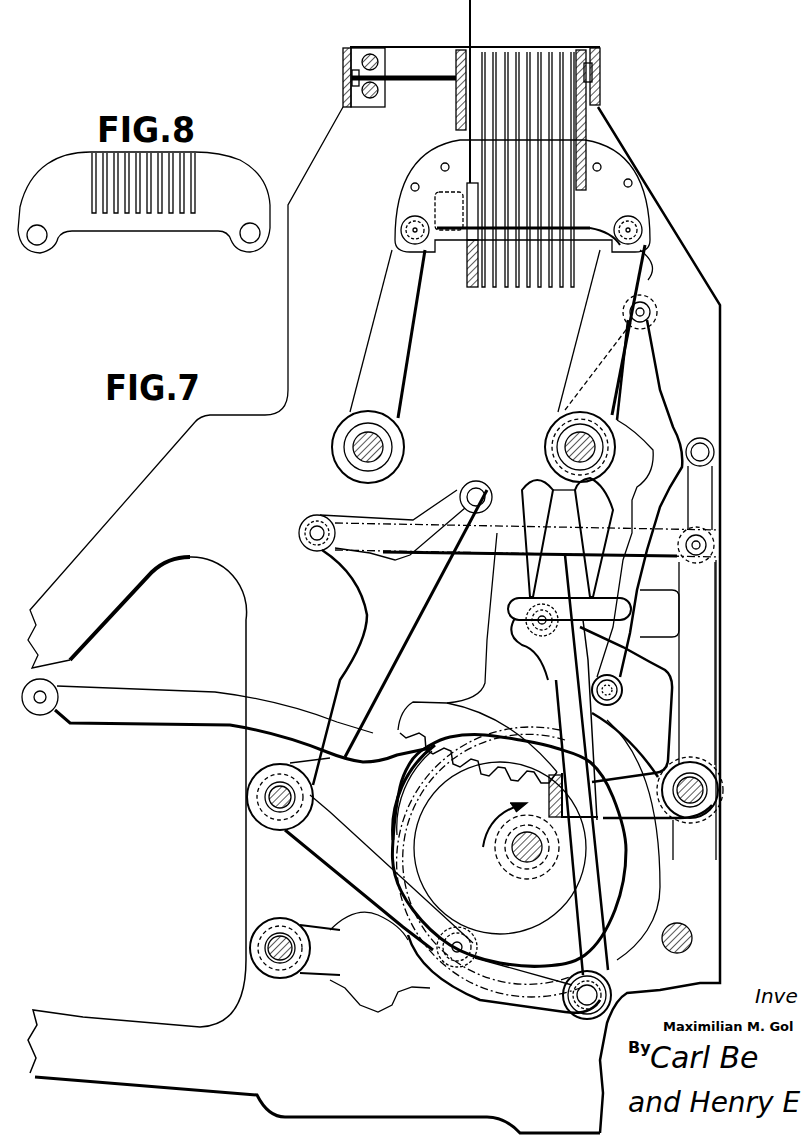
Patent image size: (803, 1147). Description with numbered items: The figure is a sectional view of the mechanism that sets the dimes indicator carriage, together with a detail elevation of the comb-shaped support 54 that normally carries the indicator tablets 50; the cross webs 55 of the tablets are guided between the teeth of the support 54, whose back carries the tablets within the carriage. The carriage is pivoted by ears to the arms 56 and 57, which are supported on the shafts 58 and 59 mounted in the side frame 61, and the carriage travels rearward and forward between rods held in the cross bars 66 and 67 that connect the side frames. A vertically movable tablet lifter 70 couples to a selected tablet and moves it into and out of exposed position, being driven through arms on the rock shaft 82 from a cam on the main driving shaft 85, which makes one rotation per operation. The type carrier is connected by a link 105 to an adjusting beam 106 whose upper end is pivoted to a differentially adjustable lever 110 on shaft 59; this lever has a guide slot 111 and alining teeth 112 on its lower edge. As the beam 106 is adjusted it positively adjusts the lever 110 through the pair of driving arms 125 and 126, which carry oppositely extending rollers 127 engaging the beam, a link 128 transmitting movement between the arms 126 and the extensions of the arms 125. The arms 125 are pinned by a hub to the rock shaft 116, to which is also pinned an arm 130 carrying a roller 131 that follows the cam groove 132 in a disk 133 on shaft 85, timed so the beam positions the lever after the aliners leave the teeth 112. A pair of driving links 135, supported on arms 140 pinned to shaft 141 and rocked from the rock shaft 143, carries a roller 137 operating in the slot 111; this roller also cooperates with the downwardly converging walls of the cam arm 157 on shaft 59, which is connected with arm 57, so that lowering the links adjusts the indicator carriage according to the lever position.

In FIG. 7, the indicator tablets 50 is at (528, 290).
In FIG. 8, the comb-shaped supports 54 is at (218, 212).
In FIG. 7, the comb-shaped supports 54 is at (640, 250).
In FIG. 7, the cross webs 55 is at (630, 192).
In FIG. 7, the arm 56 is at (383, 300).
In FIG. 7, the arm 57 is at (593, 316).
In FIG. 7, the shaft 58 is at (360, 445).
In FIG. 7, the shaft 59 is at (578, 440).
In FIG. 7, the side frame 61 is at (298, 325).
In FIG. 7, the cross bar 66 is at (600, 45).
In FIG. 7, the cross bar 67 is at (345, 47).
In FIG. 7, the tablet lifter 70 is at (472, 290).
In FIG. 7, the rock shaft 82 is at (692, 800).
In FIG. 7, the main driving shaft 85 is at (535, 860).
In FIG. 7, the links 105 is at (222, 700).
In FIG. 7, the adjusting beams 106 is at (665, 430).
In FIG. 7, the differentially adjustable levers 110 is at (638, 340).
In FIG. 7, the slot 111 is at (540, 572).
In FIG. 7, the teeth 112 is at (402, 716).
In FIG. 7, the rock shaft 116 is at (270, 795).
In FIG. 7, the driving arms 125 is at (370, 630).
In FIG. 7, the driving arms 126 is at (702, 590).
In FIG. 7, the rollers 127 is at (710, 448).
In FIG. 7, the link 128 is at (410, 522).
In FIG. 7, the arm 130 is at (332, 866).
In FIG. 7, the roller 131 is at (472, 943).
In FIG. 7, the cam groove 132 is at (660, 885).
In FIG. 7, the disk 133 is at (668, 860).
In FIG. 7, the driving links 135 is at (598, 712).
In FIG. 7, the roller 137 is at (538, 620).
In FIG. 7, the arms 140 is at (428, 985).
In FIG. 7, the rock shaft 141 is at (288, 960).
In FIG. 7, the rock shaft 143 is at (678, 950).
In FIG. 7, the cam arm 157 is at (510, 556).